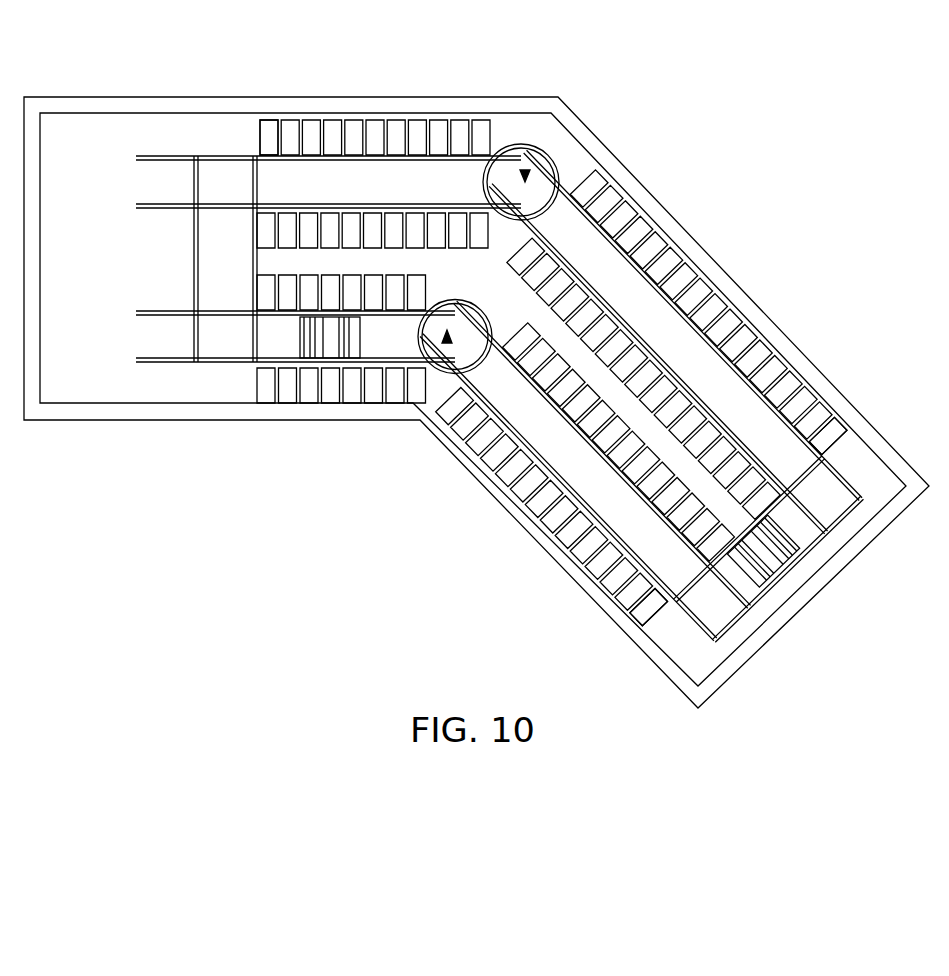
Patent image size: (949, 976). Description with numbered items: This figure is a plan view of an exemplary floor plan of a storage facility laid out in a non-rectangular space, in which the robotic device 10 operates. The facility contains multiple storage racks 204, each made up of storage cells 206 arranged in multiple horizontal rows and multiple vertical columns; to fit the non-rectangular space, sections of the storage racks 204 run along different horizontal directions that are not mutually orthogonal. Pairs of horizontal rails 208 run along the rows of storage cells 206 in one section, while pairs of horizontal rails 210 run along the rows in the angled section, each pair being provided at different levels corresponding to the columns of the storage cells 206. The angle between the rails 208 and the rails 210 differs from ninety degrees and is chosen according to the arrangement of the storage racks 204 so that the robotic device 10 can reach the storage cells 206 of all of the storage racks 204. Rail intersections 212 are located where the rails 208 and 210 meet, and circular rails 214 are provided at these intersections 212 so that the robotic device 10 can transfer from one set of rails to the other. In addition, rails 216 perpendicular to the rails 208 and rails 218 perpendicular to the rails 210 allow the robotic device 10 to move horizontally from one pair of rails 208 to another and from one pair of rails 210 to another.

The robotic device 10 is at (330, 345).
The storage rack 204 is at (260, 140).
The storage cell 206 is at (356, 128).
The horizontal rail 208 is at (150, 205).
The horizontal rail 210 is at (613, 312).
The rail intersection 212 is at (425, 432).
The circular rail 214 is at (465, 302).
The rail perpendicular to rails 208 216 is at (253, 272).
The rail perpendicular to rails 210 218 is at (845, 505).